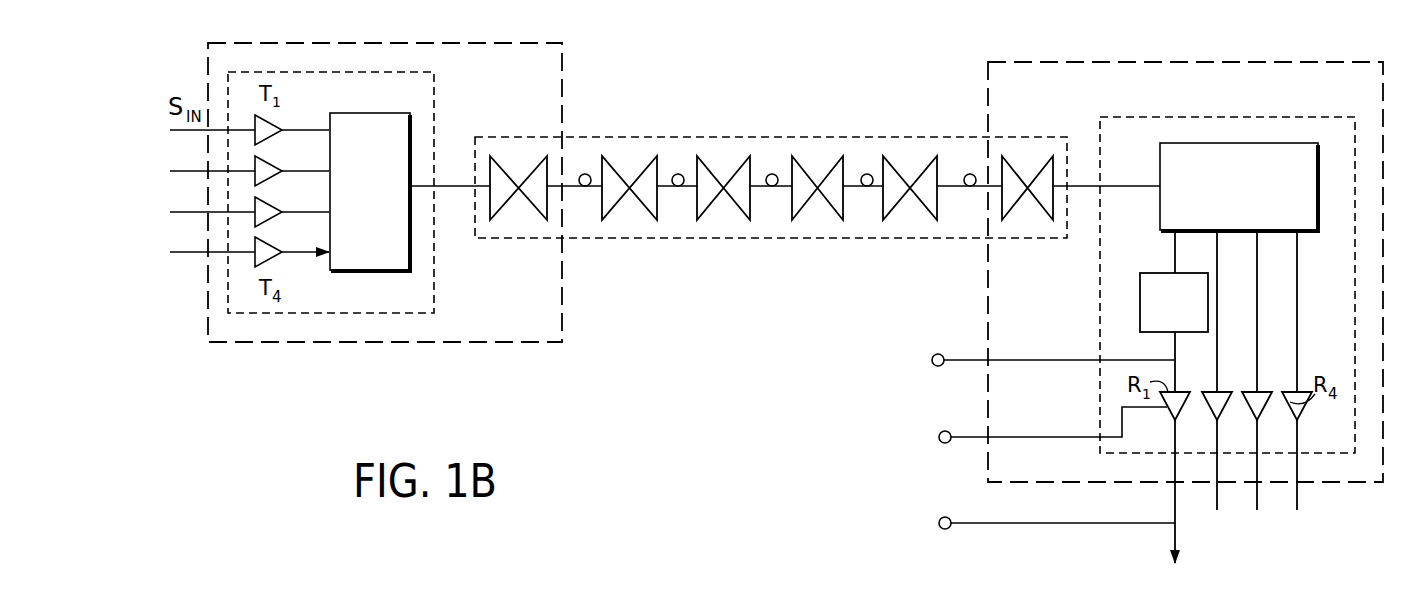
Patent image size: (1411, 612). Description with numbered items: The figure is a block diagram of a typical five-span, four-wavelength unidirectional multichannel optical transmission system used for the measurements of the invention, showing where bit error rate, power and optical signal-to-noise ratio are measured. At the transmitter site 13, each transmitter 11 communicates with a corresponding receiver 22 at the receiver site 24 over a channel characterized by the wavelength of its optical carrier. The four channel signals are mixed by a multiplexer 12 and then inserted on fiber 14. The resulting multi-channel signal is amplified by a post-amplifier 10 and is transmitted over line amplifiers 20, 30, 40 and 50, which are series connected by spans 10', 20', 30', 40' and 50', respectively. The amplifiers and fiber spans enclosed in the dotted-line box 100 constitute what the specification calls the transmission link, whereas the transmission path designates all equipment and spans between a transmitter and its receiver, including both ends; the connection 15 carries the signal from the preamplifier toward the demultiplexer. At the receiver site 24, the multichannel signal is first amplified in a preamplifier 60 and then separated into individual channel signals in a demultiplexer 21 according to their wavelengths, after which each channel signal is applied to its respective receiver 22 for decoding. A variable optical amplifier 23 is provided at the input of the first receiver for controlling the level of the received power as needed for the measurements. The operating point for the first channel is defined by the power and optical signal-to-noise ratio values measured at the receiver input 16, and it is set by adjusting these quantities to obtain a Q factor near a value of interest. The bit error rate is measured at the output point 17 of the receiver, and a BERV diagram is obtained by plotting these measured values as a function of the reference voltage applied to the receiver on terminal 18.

The transmitter 11 is at (305, 70).
The transmitter site 13 is at (450, 43).
The multiplexer 12 is at (387, 113).
The fiber 14 is at (452, 184).
The post-amplifier 10 is at (520, 155).
The line amplifier 20 is at (629, 155).
The line amplifier 30 is at (726, 155).
The line amplifier 40 is at (820, 155).
The line amplifier 50 is at (910, 155).
The preamplifier 60 is at (1033, 170).
The span 10' is at (579, 227).
The span 20' is at (683, 227).
The span 30' is at (776, 227).
The span 40' is at (867, 227).
The span 50' is at (969, 227).
The dotted-line box 100 is at (638, 239).
The receiver site 24 is at (1300, 63).
The receiver 22 is at (1300, 117).
The optical fiber to demultiplexer 15 is at (1138, 185).
The demultiplexer 21 is at (1320, 217).
The variable optical amplifier VOA 23 is at (1162, 273).
The input of receiver R_1 16 is at (932, 364).
The terminal 18 is at (939, 441).
The output point 17 is at (939, 527).